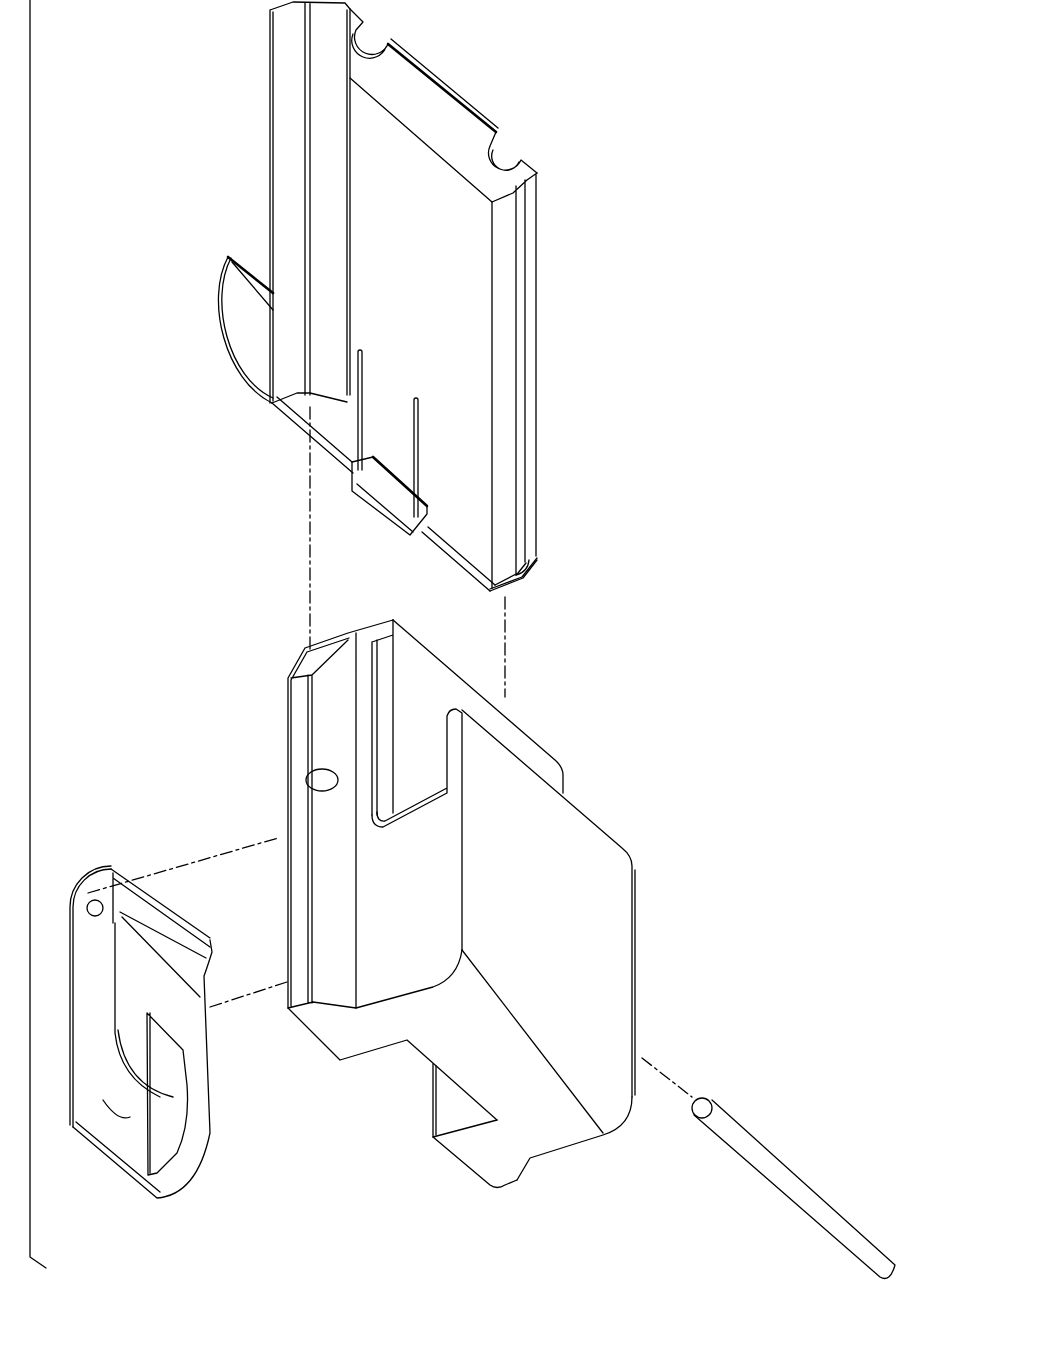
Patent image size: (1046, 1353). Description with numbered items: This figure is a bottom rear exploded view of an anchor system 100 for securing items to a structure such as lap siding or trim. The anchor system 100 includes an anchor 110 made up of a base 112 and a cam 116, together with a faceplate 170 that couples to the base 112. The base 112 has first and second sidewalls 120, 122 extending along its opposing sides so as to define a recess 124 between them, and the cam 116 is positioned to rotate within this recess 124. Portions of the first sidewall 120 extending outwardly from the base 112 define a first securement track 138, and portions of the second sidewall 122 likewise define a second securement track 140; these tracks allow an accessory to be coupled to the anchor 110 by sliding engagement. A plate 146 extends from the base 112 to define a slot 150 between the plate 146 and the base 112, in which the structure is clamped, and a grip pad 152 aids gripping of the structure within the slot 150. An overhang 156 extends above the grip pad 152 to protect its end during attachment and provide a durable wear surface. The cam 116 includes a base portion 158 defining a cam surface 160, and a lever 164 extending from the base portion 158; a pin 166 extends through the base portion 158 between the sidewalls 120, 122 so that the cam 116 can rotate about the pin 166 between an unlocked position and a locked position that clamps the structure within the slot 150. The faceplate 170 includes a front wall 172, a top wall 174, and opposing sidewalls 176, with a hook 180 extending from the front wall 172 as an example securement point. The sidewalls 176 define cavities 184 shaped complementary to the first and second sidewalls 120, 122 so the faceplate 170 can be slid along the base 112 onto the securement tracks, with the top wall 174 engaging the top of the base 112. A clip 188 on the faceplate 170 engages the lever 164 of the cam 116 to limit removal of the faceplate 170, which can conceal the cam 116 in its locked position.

The anchor system 100 is at (622, 155).
The anchor 110 is at (165, 777).
The base 112 is at (617, 988).
The cam 116 is at (80, 1027).
The first sidewall 120 is at (472, 1157).
The second sidewall 122 is at (333, 1037).
The recess 124 is at (406, 1076).
The first securement track 138 is at (507, 1183).
The second securement track 140 is at (300, 827).
The plate 146 is at (585, 812).
The slot 150 is at (415, 770).
The grip pad 152 is at (433, 697).
The overhang 156 is at (373, 633).
The base portion 158 is at (80, 947).
The cam surface 160 is at (153, 892).
The lever 164 is at (93, 1090).
The pin 166 is at (785, 1182).
The faceplate 170 is at (527, 163).
The front wall 172 is at (465, 267).
The top wall 174 is at (442, 88).
The sidewalls 176 is at (288, 155).
The hook 180 is at (228, 263).
The cavities 184 is at (300, 415).
The clip 188 is at (397, 507).